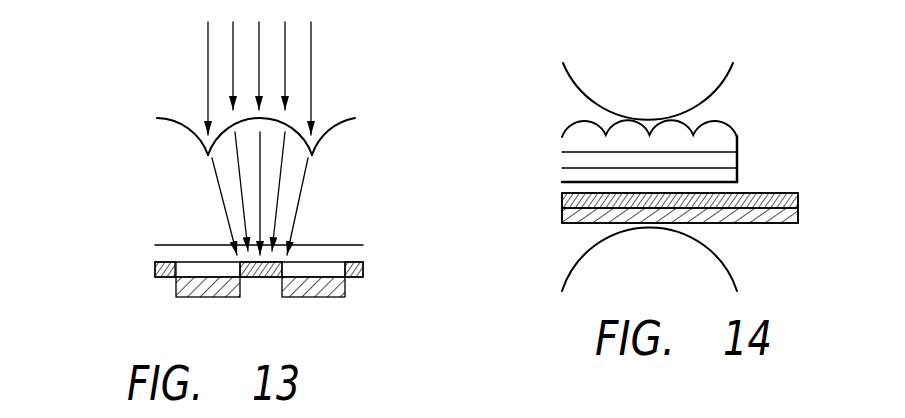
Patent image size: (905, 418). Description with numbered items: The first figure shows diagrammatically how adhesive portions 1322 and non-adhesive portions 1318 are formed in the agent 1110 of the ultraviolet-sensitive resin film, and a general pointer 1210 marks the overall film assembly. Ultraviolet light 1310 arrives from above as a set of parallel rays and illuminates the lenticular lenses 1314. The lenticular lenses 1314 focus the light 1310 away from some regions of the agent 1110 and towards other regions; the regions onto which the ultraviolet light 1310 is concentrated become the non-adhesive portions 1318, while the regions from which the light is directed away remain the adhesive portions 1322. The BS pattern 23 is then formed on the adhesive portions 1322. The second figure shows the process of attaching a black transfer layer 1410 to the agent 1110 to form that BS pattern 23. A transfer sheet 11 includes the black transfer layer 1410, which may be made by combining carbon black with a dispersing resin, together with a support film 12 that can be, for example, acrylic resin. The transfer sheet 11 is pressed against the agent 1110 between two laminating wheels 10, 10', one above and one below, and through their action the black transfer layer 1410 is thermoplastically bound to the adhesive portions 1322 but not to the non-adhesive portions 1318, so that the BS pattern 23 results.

In FIG. 13, the light 1310 is at (320, 37).
In FIG. 13, the lenticular lenses 1314 is at (364, 120).
In FIG. 13, the imaging sensor assembly 1210 is at (123, 212).
In FIG. 13, the adhesive portions 1322 is at (203, 267).
In FIG. 13, the BS pattern 23 is at (208, 292).
In FIG. 13, the non-adhesive portions 1318 is at (260, 273).
In FIG. 13, the agent 1110 is at (362, 270).
In FIG. 14, the agent 1110 is at (570, 173).
In FIG. 14, the laminating wheel 10 is at (648, 89).
In FIG. 14, the laminating wheel 10' is at (649, 259).
In FIG. 14, the black transfer layer 1410 is at (762, 192).
In FIG. 14, the transfer sheet 11 is at (819, 182).
In FIG. 14, the support film 12 is at (750, 217).